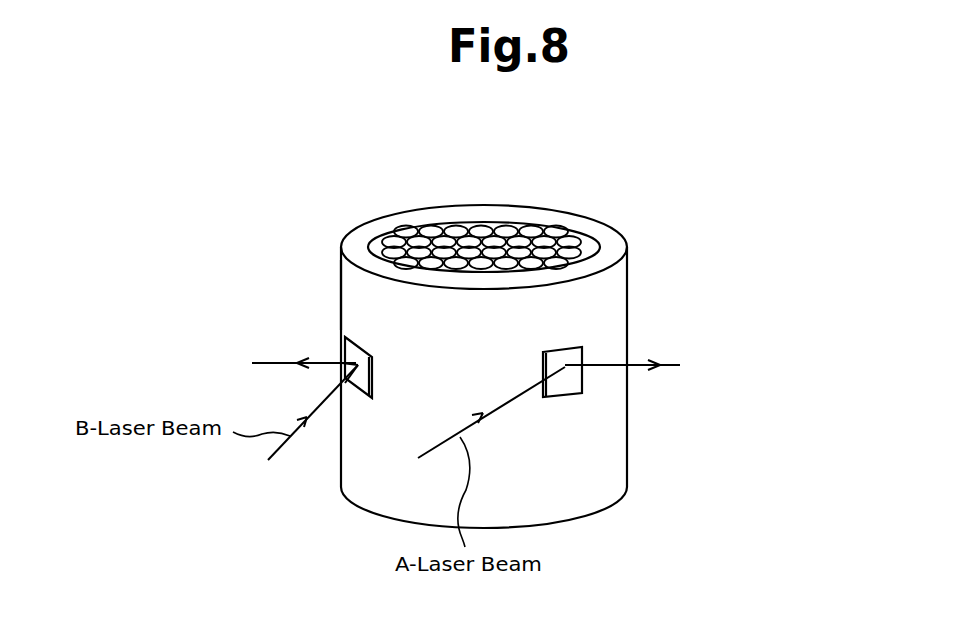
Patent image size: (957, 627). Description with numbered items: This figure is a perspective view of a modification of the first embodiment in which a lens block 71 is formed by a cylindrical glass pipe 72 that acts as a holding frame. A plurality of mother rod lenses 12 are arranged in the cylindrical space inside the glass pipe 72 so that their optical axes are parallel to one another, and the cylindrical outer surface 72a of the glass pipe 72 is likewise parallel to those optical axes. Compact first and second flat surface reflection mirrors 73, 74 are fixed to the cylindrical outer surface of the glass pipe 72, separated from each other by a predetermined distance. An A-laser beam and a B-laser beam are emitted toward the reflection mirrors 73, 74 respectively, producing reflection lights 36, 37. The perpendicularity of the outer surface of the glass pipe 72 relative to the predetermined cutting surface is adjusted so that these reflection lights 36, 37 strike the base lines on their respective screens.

The mother rod lenses 12 is at (441, 226).
The lens block 71 is at (618, 184).
The cylindrical glass pipe 72 is at (613, 242).
The side wall of holder 72a is at (346, 300).
The first flat surface reflection mirror 73 is at (563, 387).
The second flat surface reflection mirror 74 is at (358, 390).
The reflection light of the A-laser beam 36 is at (673, 363).
The reflection light of the B-laser beam 37 is at (270, 363).